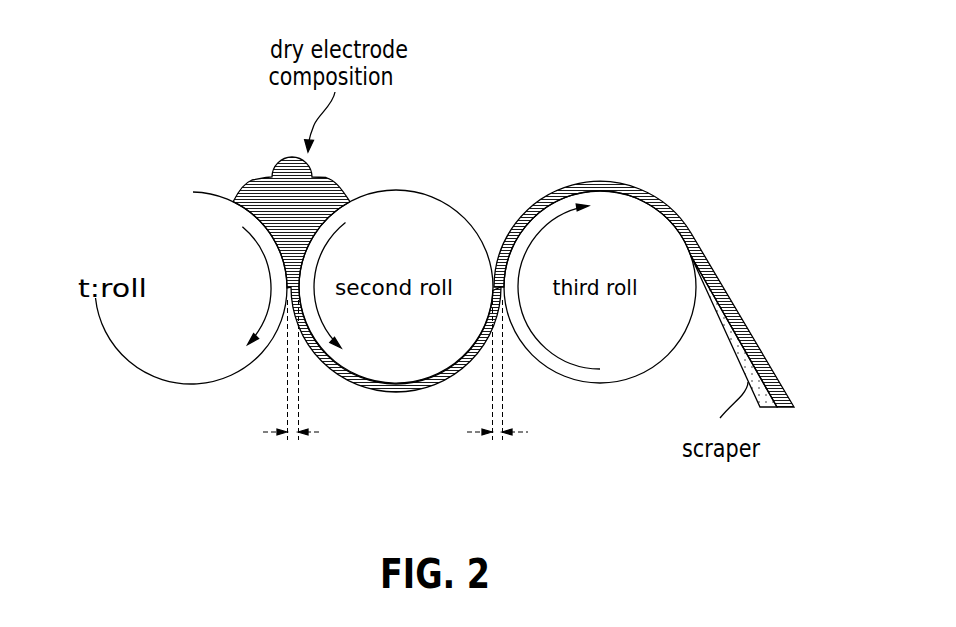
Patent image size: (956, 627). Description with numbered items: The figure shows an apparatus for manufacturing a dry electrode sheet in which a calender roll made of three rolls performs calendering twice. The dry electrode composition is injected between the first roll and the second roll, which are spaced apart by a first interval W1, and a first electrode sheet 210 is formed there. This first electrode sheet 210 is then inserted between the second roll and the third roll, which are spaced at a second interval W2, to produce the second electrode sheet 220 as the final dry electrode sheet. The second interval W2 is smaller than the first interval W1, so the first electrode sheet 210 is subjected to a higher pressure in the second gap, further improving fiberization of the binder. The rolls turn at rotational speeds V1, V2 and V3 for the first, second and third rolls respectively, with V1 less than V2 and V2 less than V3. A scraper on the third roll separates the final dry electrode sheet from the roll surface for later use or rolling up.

The first electrode sheet 210 is at (397, 398).
The second electrode sheet 220 is at (670, 203).
The rotational speed of the first roll V1 is at (240, 298).
The rotational speed of the second roll V2 is at (347, 295).
The rotational speed of the third roll V3 is at (578, 282).
The first interval W1 is at (283, 401).
The second interval W2 is at (500, 401).